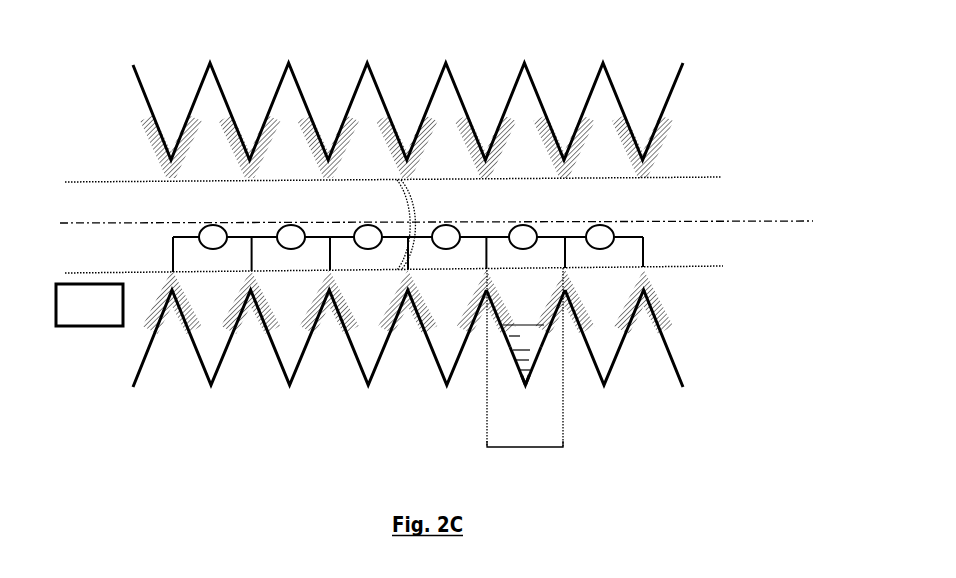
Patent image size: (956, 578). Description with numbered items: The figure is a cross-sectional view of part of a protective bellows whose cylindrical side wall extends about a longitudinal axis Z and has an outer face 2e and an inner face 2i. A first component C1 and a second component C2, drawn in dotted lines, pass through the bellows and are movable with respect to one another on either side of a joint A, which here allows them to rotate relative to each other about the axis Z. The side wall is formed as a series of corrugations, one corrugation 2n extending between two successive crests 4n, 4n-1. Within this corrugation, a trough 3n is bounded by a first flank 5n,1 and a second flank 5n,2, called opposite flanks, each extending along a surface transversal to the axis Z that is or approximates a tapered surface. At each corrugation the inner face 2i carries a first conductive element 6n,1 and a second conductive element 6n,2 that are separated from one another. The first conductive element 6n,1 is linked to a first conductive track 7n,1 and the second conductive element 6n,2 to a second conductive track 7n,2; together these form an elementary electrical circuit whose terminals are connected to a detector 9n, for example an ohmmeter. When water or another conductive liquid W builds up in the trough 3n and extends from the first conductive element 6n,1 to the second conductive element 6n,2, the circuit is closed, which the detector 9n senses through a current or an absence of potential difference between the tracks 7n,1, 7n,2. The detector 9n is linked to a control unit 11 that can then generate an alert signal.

The outer face 2e is at (356, 93).
The inner face 2i is at (675, 101).
The first component C1 is at (109, 180).
The second component C2 is at (725, 178).
The longitudinal axis Z is at (447, 221).
The joint A is at (399, 196).
The control unit 11 is at (95, 326).
The detector 9n is at (524, 233).
The first conductive track 7n,1 is at (487, 244).
The second conductive track 7n,2 is at (562, 241).
The crest 4n is at (484, 287).
The preceding crest 4n-1 is at (567, 287).
The second conductive element 6n,2 is at (501, 320).
The first conductive element 6n,1 is at (550, 314).
The second flank 5n,2 is at (516, 379).
The first flank 5n,1 is at (533, 379).
The trough 3n is at (526, 390).
The conductive liquid W is at (533, 346).
The corrugation 2n is at (525, 448).